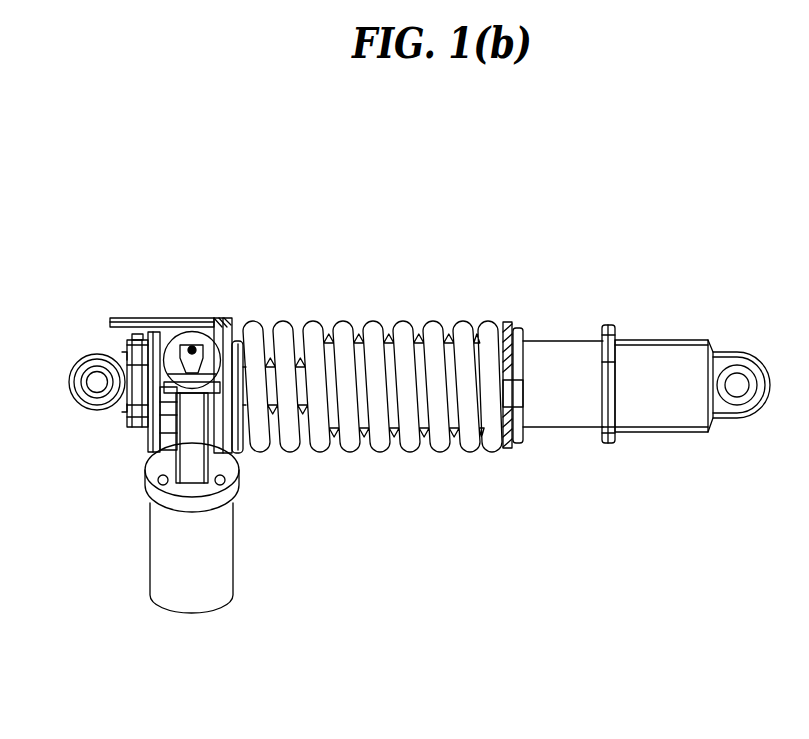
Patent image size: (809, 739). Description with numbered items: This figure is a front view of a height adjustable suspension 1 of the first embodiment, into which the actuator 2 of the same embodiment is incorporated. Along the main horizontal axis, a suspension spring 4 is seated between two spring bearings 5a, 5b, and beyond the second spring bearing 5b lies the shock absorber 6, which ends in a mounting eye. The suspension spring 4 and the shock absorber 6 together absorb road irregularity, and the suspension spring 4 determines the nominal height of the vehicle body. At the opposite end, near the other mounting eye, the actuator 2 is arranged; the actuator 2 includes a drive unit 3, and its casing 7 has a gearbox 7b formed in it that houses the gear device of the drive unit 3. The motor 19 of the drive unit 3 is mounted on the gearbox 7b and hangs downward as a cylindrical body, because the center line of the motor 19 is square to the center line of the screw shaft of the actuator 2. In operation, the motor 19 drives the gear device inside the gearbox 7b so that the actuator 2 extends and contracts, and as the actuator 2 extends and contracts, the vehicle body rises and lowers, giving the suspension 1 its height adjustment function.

The suspension 1 is at (375, 223).
The actuator 2 is at (172, 306).
The drive unit 3 is at (145, 518).
The suspension spring 4 is at (338, 322).
The spring bearing 5a is at (230, 320).
The spring bearing 5b is at (508, 322).
The shock absorber 6 is at (563, 352).
The casing 7 is at (139, 394).
The gearbox 7b is at (193, 457).
The motor 19 is at (165, 568).